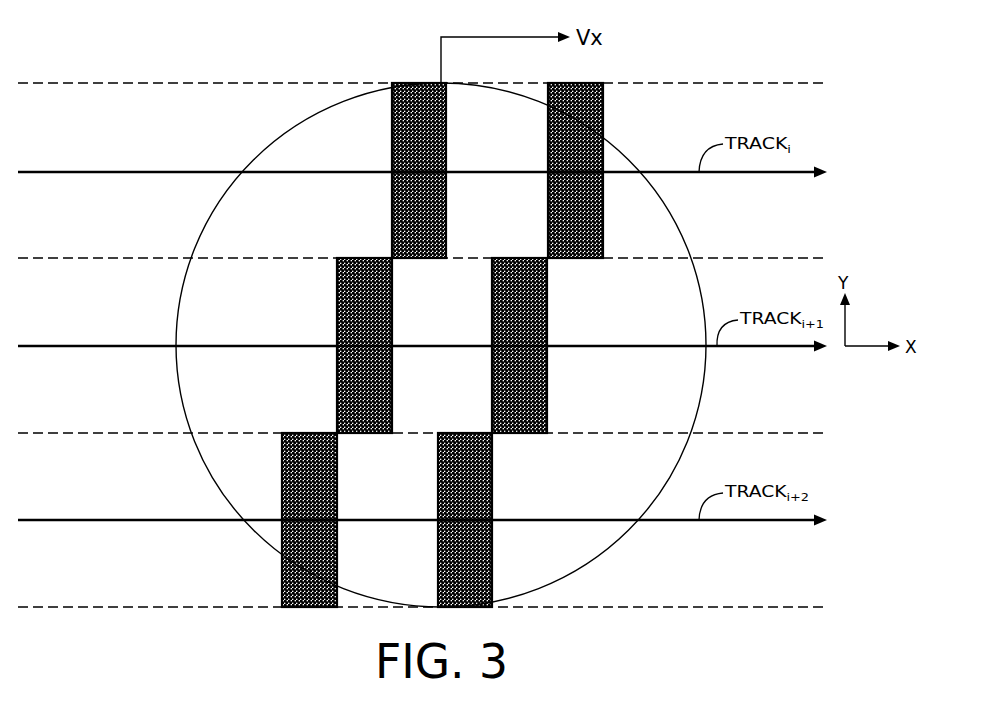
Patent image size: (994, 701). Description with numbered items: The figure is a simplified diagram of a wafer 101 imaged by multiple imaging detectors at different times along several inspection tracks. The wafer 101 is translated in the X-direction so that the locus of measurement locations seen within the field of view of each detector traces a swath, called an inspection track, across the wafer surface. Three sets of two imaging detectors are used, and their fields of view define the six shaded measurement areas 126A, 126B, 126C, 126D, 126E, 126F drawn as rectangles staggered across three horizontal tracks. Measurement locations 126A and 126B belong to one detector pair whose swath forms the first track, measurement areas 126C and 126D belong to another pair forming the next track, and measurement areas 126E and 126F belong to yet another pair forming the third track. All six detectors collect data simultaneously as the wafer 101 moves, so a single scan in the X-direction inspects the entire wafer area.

The wafer 101 is at (254, 156).
The measurement location 126A is at (442, 156).
The measurement location 126B is at (555, 231).
The measurement area 126C is at (384, 331).
The measurement area 126D is at (495, 406).
The measurement area 126E is at (328, 503).
The measurement area 126F is at (446, 579).